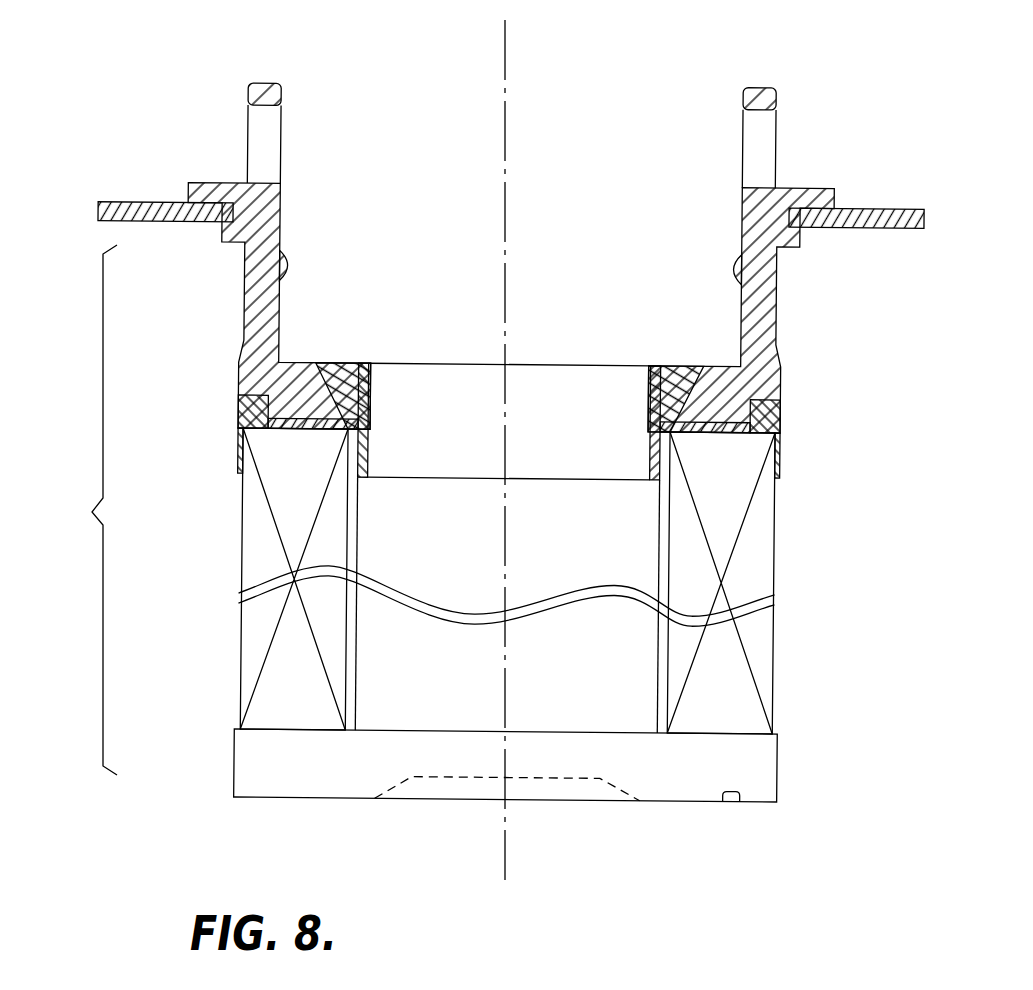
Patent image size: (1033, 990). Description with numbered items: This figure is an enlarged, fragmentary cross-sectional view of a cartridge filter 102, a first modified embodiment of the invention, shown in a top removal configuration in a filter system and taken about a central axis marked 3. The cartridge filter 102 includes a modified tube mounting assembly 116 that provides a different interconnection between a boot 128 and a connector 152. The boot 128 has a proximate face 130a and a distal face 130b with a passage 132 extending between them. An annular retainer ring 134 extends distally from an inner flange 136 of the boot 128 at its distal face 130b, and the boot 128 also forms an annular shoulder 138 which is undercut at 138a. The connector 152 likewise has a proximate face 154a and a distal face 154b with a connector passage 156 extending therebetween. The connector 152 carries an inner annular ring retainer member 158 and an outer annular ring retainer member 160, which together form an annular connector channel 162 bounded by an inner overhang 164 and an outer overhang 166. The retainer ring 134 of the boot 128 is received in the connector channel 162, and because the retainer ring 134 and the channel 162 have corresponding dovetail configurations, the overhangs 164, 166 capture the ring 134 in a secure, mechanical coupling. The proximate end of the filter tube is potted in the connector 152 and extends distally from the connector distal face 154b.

The section line / central axis 3 is at (505, 48).
The cartridge filter 102 is at (799, 81).
The tube mounting assembly 116 is at (799, 166).
The boot 128 is at (243, 84).
The proximate face 130a is at (225, 182).
The distal face 130b is at (693, 437).
The passage 132 is at (276, 208).
The annular retainer ring 134 is at (252, 430).
The inner flange 136 is at (745, 403).
The annular shoulder 138 is at (236, 410).
The undercut 138a is at (238, 420).
The connector 152 is at (647, 478).
The proximate face 154a is at (661, 365).
The distal face 154b is at (357, 478).
The connector passage 156 is at (366, 418).
The inner annular ring retainer member 158 is at (700, 365).
The outer annular ring retainer member 160 is at (776, 410).
The annular connector channel 162 is at (366, 373).
The inner overhang 164 is at (332, 410).
The outer overhang 166 is at (742, 403).